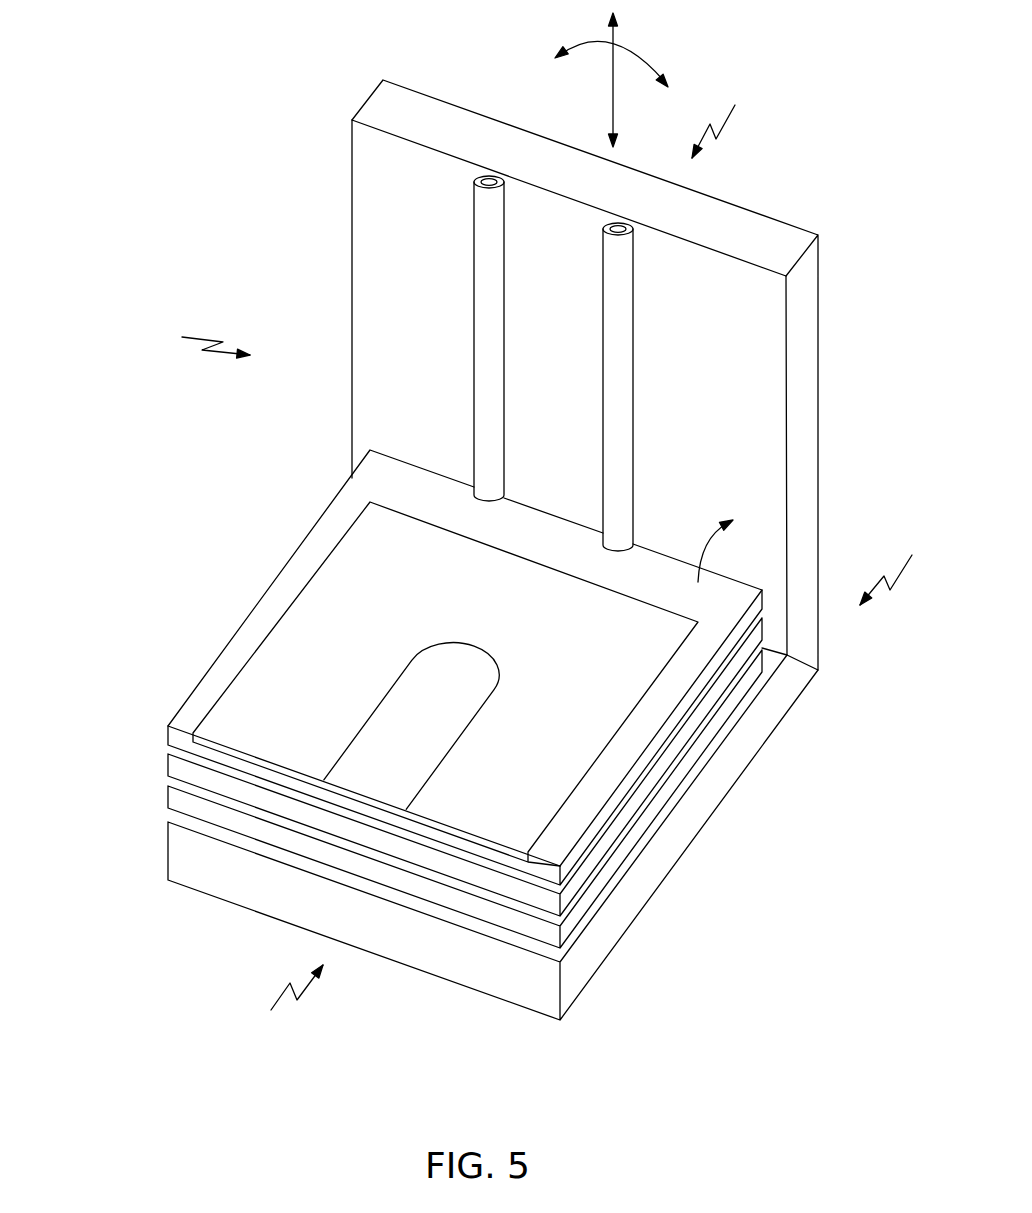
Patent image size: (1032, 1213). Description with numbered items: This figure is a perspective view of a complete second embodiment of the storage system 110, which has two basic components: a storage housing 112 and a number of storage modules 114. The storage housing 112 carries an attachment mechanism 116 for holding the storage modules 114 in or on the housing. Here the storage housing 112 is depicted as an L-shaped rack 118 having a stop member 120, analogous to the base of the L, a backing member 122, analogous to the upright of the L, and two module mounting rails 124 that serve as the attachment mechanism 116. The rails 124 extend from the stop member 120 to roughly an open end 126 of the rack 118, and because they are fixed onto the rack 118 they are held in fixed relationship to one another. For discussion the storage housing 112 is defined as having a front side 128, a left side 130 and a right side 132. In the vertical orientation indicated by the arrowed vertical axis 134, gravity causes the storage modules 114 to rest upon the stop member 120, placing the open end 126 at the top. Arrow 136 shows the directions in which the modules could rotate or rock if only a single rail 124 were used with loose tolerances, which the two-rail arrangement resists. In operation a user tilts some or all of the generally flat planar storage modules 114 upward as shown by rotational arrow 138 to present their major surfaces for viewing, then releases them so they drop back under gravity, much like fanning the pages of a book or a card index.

The storage system 110 is at (185, 412).
The storage housing 112 is at (352, 156).
The storage modules 114 is at (168, 732).
The attachment mechanism 116 is at (478, 208).
The L-shaped rack 118 is at (358, 186).
The stop member 120 is at (743, 767).
The backing member 122 is at (818, 338).
The module mounting rails 124 is at (480, 262).
The open end 126 is at (730, 116).
The front side 128 is at (277, 1004).
The left side 130 is at (186, 339).
The right side 132 is at (902, 565).
The arrowed vertical axis 134 is at (615, 35).
The arrow 136 is at (655, 58).
The rotational arrow 138 is at (705, 560).